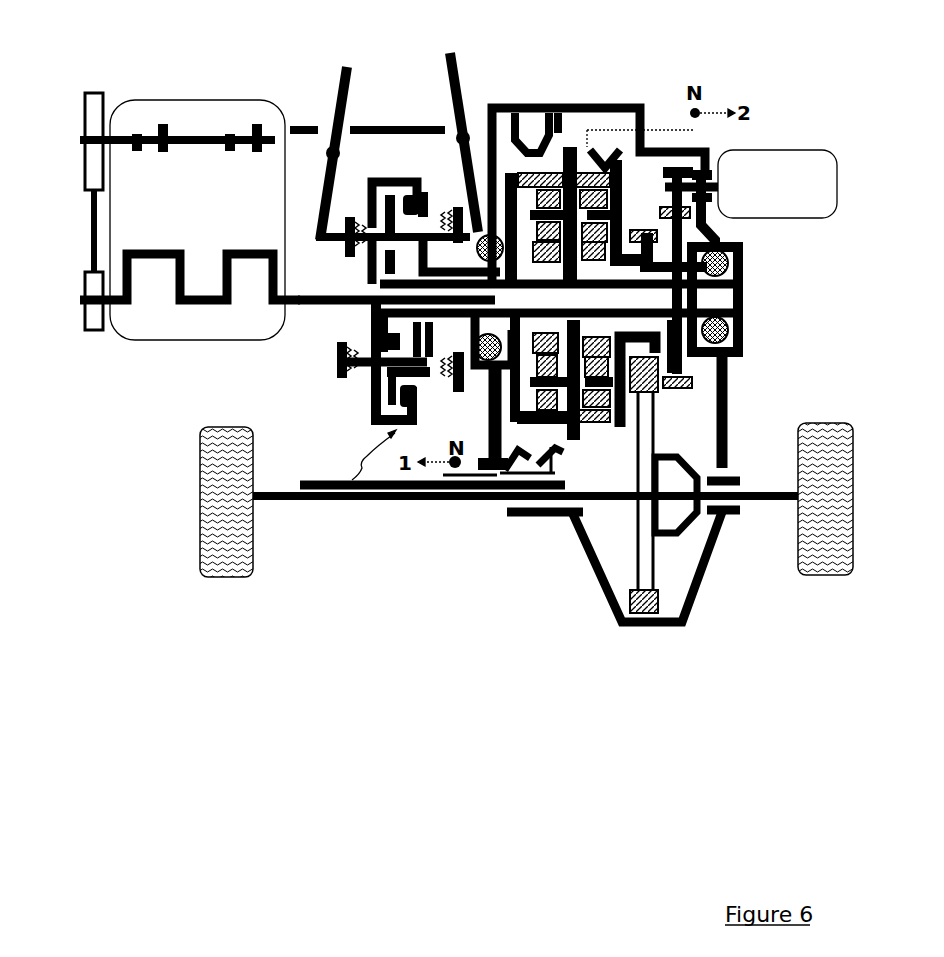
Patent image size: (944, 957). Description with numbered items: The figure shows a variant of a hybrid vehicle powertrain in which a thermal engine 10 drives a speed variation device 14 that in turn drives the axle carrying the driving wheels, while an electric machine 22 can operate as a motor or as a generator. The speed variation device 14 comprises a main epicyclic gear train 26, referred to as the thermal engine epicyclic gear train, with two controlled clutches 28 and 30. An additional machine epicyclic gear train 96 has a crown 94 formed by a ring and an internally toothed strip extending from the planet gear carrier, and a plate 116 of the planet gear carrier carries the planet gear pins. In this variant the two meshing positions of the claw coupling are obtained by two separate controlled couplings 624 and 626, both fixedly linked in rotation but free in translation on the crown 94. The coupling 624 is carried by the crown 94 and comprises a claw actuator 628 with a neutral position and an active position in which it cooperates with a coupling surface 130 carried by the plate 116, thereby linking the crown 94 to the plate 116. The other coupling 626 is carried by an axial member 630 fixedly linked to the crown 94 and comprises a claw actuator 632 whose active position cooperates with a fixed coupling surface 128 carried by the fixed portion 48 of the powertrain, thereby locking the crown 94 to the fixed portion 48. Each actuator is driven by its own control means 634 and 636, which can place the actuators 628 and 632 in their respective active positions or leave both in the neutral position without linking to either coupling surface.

The thermal engine 10 is at (197, 218).
The electric machine 22 is at (784, 195).
The controlled clutch 30 is at (367, 196).
The controlled clutch 28 is at (372, 324).
The speed variation device 14 is at (352, 500).
The main epicyclic gear train 26 is at (489, 388).
The control means 636 is at (455, 480).
The fixed coupling surface 128 is at (495, 490).
The claw actuator 632 is at (567, 455).
The coupling surface 130 is at (613, 459).
The machine epicyclic gear train 96 is at (642, 412).
The fixed portion 48 is at (728, 384).
The plate 116 is at (648, 206).
The crown 94 is at (607, 190).
The control means 634 is at (680, 130).
The controlled coupling 624 is at (618, 96).
The claw actuator 628 is at (601, 122).
The controlled coupling 626 is at (545, 122).
The axial member 630 is at (490, 122).